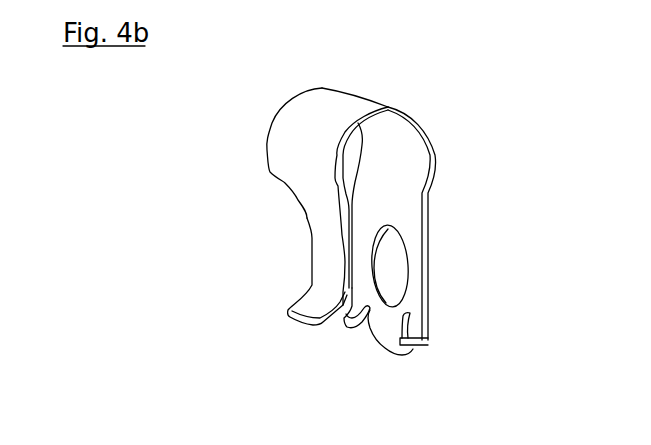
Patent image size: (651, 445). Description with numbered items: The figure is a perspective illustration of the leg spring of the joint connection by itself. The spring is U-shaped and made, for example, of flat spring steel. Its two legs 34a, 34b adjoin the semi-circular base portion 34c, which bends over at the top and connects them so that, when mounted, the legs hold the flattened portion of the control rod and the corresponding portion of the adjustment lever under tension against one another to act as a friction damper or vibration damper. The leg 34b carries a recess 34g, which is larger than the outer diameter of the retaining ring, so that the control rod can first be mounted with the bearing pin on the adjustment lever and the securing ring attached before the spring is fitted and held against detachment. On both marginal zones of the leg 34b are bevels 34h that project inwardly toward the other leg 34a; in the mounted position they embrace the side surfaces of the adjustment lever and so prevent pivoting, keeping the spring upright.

The semi-circular base portion 34c is at (284, 101).
The leg 34a is at (312, 235).
The leg 34b is at (424, 224).
The recess 34g is at (409, 288).
The bevels 34h is at (358, 332).